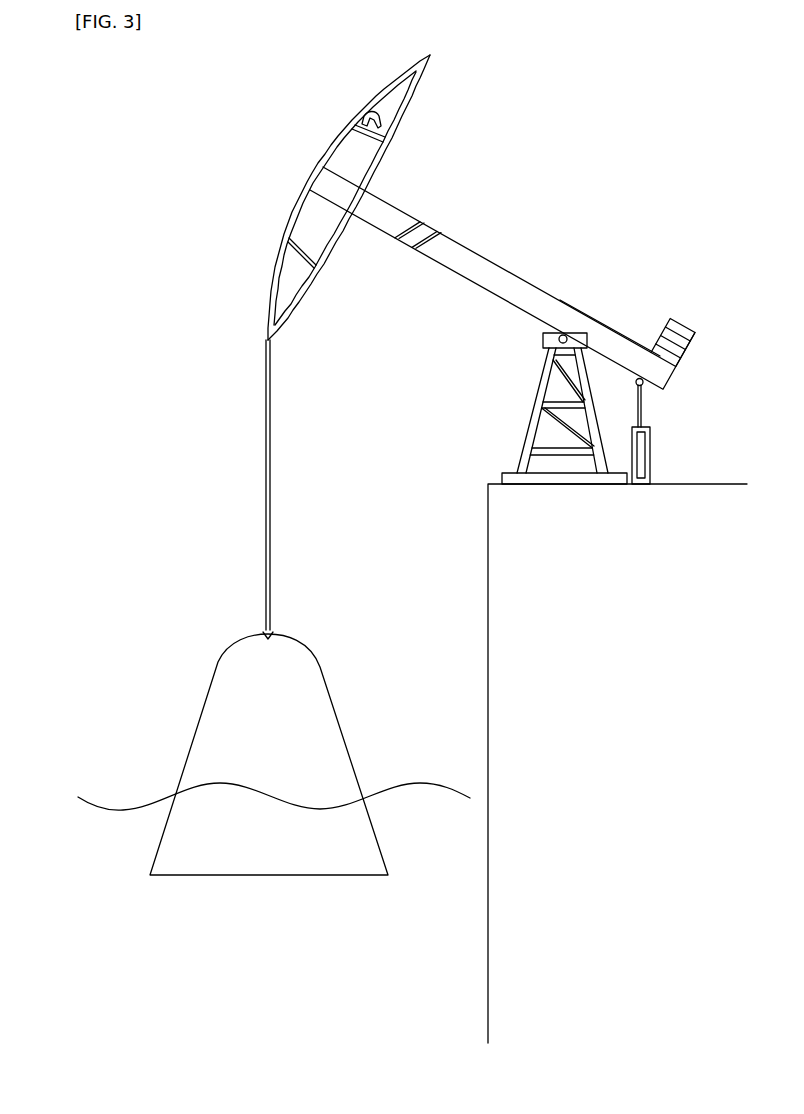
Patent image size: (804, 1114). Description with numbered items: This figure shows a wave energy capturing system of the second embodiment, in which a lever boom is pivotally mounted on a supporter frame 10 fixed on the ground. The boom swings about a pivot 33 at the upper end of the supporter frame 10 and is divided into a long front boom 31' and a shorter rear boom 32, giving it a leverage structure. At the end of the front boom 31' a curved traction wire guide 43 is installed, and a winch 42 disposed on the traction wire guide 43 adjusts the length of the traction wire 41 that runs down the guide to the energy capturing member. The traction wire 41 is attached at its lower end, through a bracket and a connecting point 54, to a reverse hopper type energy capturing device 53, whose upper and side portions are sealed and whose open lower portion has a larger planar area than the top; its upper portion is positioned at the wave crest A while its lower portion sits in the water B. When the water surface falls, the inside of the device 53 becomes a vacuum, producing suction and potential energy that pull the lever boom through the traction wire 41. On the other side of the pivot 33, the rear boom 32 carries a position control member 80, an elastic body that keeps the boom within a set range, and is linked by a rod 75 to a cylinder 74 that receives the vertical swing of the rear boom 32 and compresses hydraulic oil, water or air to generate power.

The supporter frame 10 is at (508, 414).
The front boom 31' is at (502, 278).
The rear boom 32 is at (614, 332).
The pivot 33 is at (567, 333).
The traction wire 41 is at (272, 452).
The winch 42 is at (382, 125).
The traction wire guide 43 is at (312, 160).
The reverse hopper type energy capturing device 53 is at (330, 728).
The cable attachment knot 54 is at (273, 632).
The cylinder 74 is at (652, 455).
The piston rod 75 is at (648, 403).
The position control member 80 is at (680, 318).
The wave crest A is at (420, 783).
The water B is at (125, 812).